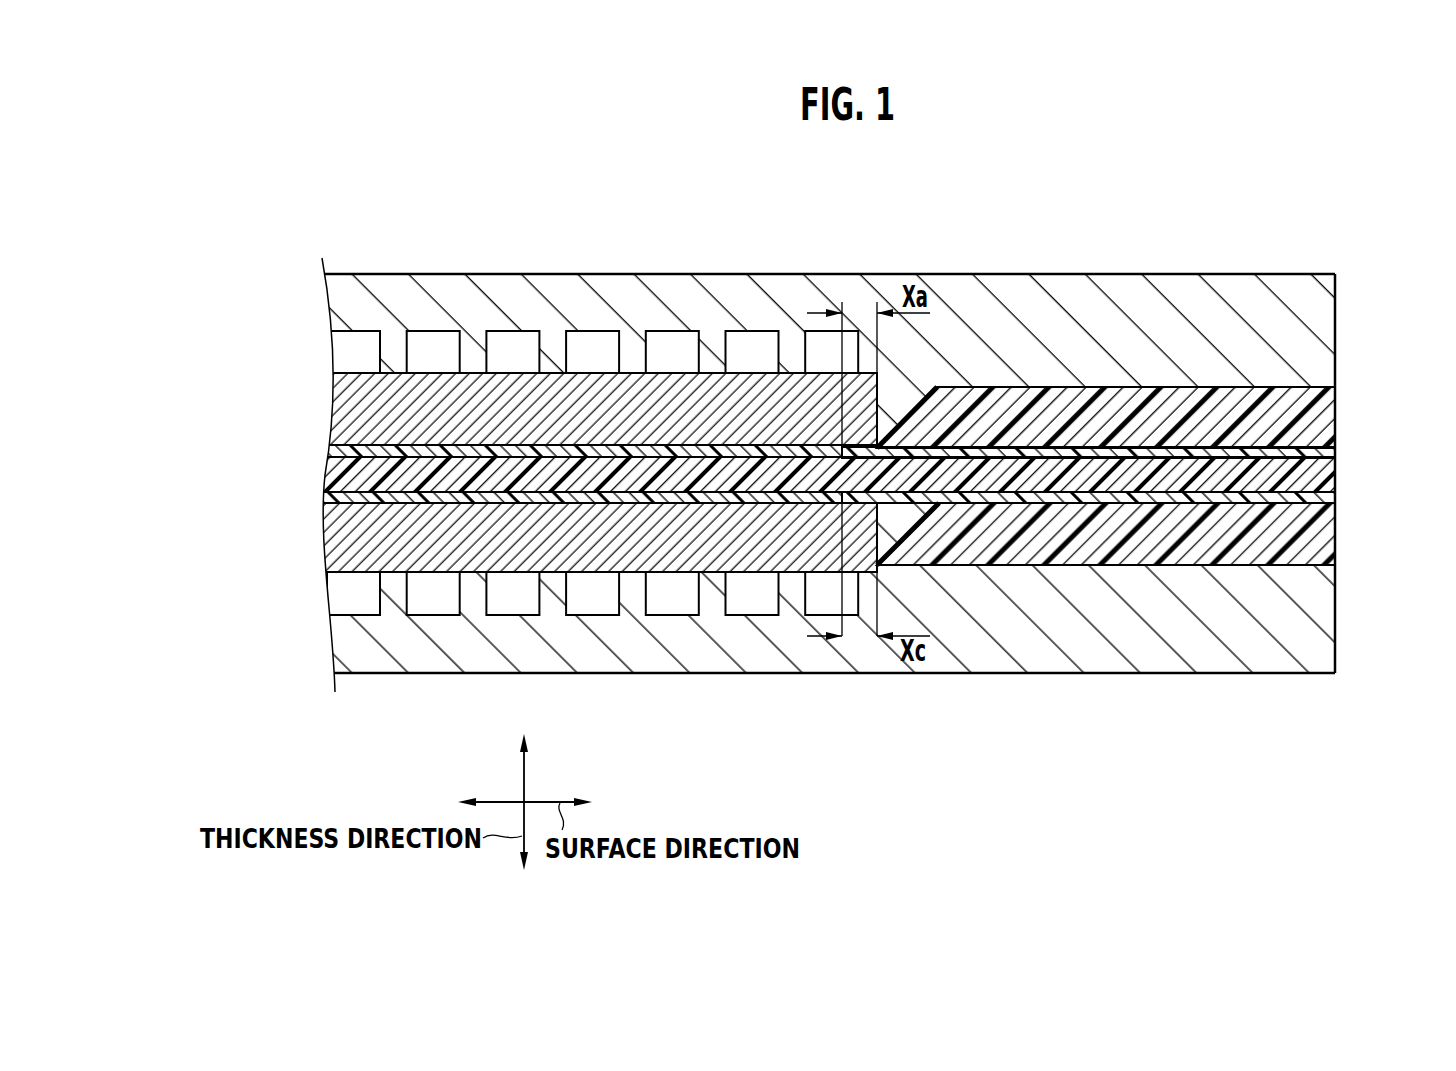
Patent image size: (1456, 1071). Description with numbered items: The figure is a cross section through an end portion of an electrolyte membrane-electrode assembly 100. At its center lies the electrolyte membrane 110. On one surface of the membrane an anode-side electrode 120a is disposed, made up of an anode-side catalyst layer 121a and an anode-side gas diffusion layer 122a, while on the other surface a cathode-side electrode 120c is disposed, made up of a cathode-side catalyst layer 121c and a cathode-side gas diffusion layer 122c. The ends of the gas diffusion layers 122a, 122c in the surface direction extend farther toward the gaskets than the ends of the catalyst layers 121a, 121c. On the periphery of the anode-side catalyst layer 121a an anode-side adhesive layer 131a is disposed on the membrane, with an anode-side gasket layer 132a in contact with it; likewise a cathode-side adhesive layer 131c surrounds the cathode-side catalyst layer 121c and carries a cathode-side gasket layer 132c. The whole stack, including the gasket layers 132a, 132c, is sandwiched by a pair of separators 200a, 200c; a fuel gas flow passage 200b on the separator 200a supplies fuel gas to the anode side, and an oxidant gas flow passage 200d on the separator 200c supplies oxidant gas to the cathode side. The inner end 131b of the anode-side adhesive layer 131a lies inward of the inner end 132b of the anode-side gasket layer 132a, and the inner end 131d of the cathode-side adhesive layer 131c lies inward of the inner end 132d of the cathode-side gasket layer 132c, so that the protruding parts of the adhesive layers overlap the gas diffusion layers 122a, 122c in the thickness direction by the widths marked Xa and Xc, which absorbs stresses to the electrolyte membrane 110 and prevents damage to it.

The electrolyte membrane-electrode assembly 100 is at (707, 472).
The electrolyte membrane 110 is at (335, 470).
The anode-side electrode 120a is at (514, 415).
The cathode-side electrode 120c is at (514, 529).
The anode-side catalyst layer 121a is at (336, 452).
The cathode-side catalyst layer 121c is at (335, 497).
The anode-side gas diffusion layer 122a is at (345, 402).
The cathode-side gas diffusion layer 122c is at (345, 545).
The anode-side adhesive layer 131a is at (1327, 453).
The inner end of anode-side adhesive layer 131b is at (880, 447).
The cathode-side adhesive layer 131c is at (1327, 502).
The inner end of cathode-side adhesive layer 131d is at (878, 500).
The anode-side gasket layer 132a is at (1323, 398).
The inner end of anode-side gasket layer 132b is at (878, 402).
The cathode-side gasket layer 132c is at (1325, 541).
The inner end of cathode-side gasket layer 132d is at (878, 542).
The separator 200a is at (1323, 306).
The fuel gas flow passage 200b is at (748, 347).
The separator 200c is at (1325, 644).
The oxidant gas flow passage 200d is at (748, 603).